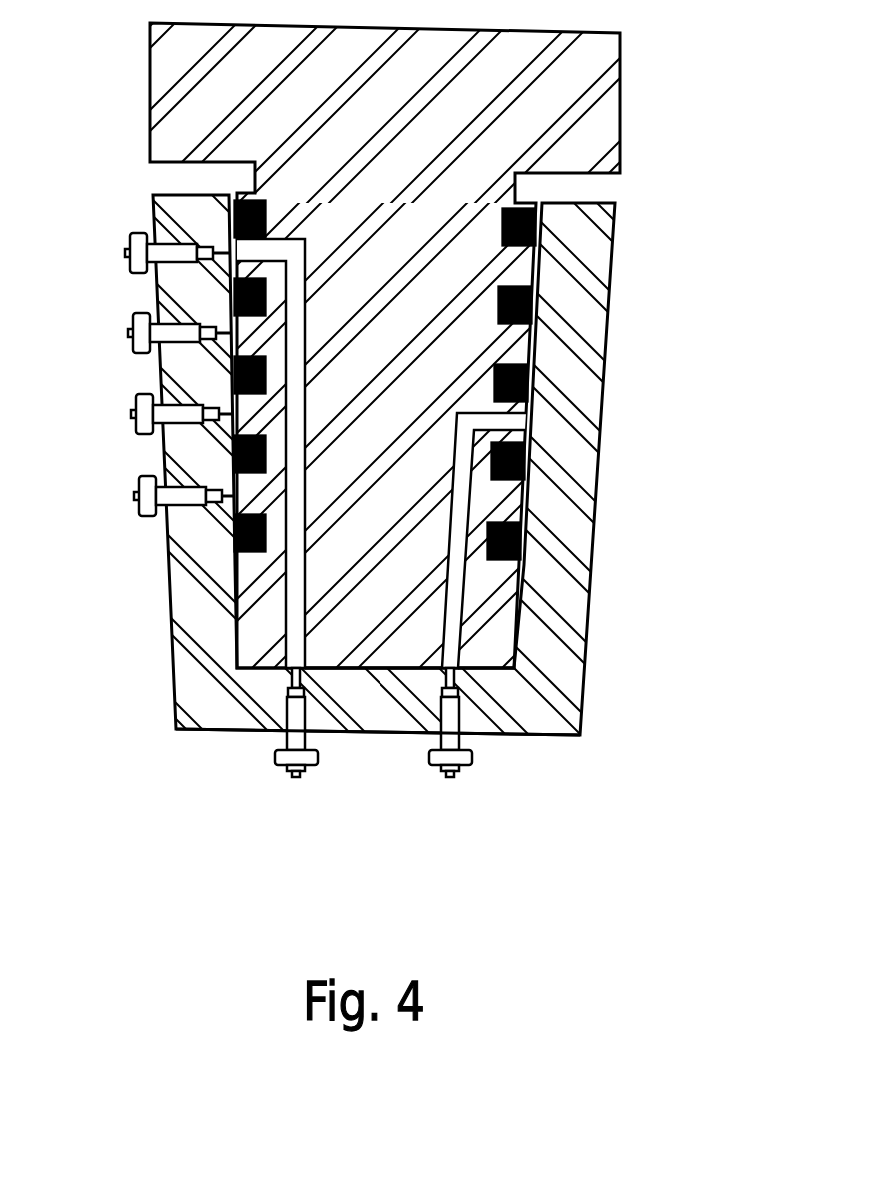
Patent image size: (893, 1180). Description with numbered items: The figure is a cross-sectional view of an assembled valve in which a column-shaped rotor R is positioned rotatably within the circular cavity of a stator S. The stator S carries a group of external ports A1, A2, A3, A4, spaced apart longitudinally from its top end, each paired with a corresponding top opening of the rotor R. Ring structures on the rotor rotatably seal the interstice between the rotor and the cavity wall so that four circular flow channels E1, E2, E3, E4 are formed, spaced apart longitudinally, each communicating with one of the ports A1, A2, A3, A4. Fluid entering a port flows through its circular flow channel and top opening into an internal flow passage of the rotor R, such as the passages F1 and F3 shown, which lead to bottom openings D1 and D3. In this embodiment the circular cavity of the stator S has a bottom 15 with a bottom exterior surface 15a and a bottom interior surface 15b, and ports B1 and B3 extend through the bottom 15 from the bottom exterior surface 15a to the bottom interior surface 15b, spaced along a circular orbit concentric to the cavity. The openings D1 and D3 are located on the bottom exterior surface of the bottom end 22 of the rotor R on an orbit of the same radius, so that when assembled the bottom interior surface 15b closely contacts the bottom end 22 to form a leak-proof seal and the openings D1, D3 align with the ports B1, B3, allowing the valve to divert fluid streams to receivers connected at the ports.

The rotor R is at (641, 106).
The stator S is at (628, 390).
The port A1 is at (128, 257).
The port A2 is at (131, 337).
The port A3 is at (134, 418).
The port A4 is at (137, 500).
The port B1 is at (275, 755).
The port B3 is at (473, 752).
The circular flow channel E1 is at (542, 247).
The circular flow channel E2 is at (540, 322).
The circular flow channel E3 is at (533, 403).
The circular flow channel E4 is at (532, 483).
The internal flow passage F1 is at (290, 452).
The internal flow passage F3 is at (462, 522).
The bottom opening D1 is at (308, 662).
The bottom opening D3 is at (460, 668).
The bottom end 22 is at (388, 668).
The bottom 15 is at (387, 720).
The bottom exterior surface 15a is at (407, 737).
The bottom interior surface 15b is at (483, 675).